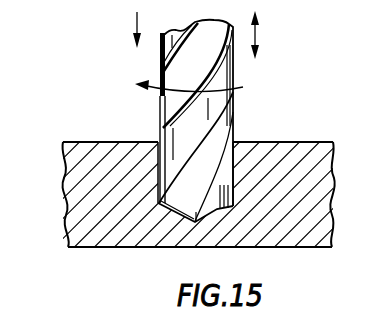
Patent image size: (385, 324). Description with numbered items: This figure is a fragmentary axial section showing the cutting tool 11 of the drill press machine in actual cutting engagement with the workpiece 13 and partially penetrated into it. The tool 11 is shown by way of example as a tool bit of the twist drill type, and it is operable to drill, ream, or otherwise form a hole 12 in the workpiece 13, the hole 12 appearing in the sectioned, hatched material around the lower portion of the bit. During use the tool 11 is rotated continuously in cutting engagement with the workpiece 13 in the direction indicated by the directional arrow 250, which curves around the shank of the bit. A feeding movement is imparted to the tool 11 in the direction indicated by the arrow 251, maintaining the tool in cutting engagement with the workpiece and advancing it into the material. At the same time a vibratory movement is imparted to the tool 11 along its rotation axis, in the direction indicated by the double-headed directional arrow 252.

The cutting tool 11 is at (166, 129).
The hole 12 is at (222, 208).
The workpiece 13 is at (85, 200).
The directional arrow 250 is at (224, 91).
The arrow 251 is at (137, 27).
The directional arrow 252 is at (258, 33).